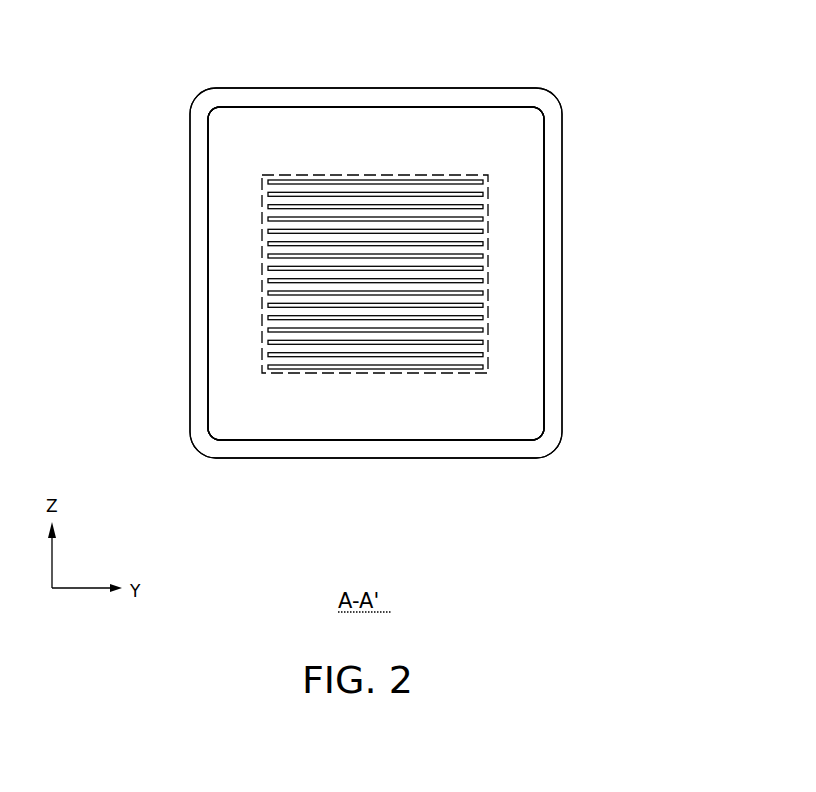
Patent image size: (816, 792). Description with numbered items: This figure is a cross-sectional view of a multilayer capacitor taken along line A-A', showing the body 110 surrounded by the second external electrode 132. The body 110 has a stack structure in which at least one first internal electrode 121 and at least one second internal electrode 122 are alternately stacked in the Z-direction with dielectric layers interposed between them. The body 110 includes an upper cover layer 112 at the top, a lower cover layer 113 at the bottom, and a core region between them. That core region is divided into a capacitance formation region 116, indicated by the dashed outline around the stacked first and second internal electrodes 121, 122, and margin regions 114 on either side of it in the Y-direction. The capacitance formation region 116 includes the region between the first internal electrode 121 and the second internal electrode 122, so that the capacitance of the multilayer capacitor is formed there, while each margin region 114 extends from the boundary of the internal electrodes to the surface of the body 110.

The body 110 is at (483, 89).
The upper cover layer 112 is at (443, 120).
The lower cover layer 113 is at (408, 410).
The margin region 114 is at (523, 212).
The capacitance formation region 116 is at (376, 157).
The first internal electrode 121 is at (279, 180).
The second internal electrode 122 is at (317, 195).
The second external electrode 132 is at (555, 122).